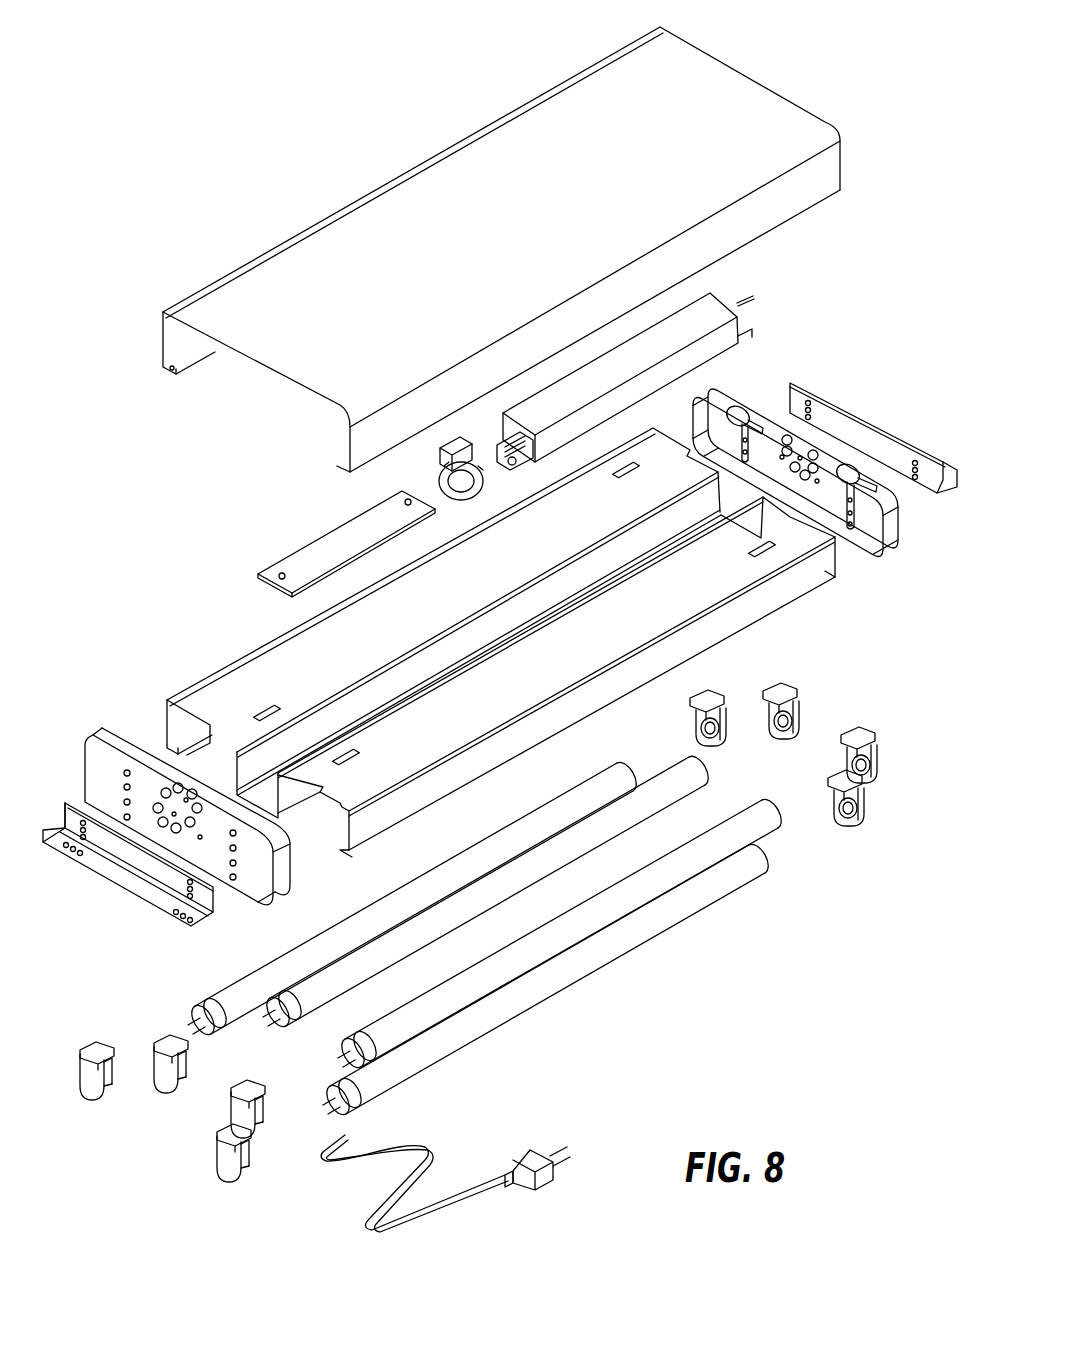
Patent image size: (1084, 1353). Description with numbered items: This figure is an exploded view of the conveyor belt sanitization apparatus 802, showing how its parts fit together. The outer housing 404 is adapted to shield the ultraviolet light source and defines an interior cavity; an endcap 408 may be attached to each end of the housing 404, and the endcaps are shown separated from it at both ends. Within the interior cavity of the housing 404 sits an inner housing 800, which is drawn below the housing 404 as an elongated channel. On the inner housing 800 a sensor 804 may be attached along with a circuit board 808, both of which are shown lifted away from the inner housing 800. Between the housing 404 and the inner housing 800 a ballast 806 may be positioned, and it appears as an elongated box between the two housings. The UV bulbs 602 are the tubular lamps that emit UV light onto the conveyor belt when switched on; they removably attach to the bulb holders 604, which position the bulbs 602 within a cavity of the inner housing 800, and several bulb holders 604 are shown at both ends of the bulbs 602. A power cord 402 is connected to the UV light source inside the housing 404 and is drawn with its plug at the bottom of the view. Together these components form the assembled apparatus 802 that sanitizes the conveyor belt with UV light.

The light fixture assembly 802 is at (208, 190).
The housing 404 is at (447, 200).
The ballast 806 is at (612, 355).
The sensor 804 is at (445, 445).
The endcap 408 is at (757, 388).
The circuit board 808 is at (320, 560).
The inner housing 800 is at (318, 638).
The bulb holders 604 is at (867, 828).
The UV bulbs 602 is at (650, 930).
The power cord 402 is at (423, 1215).